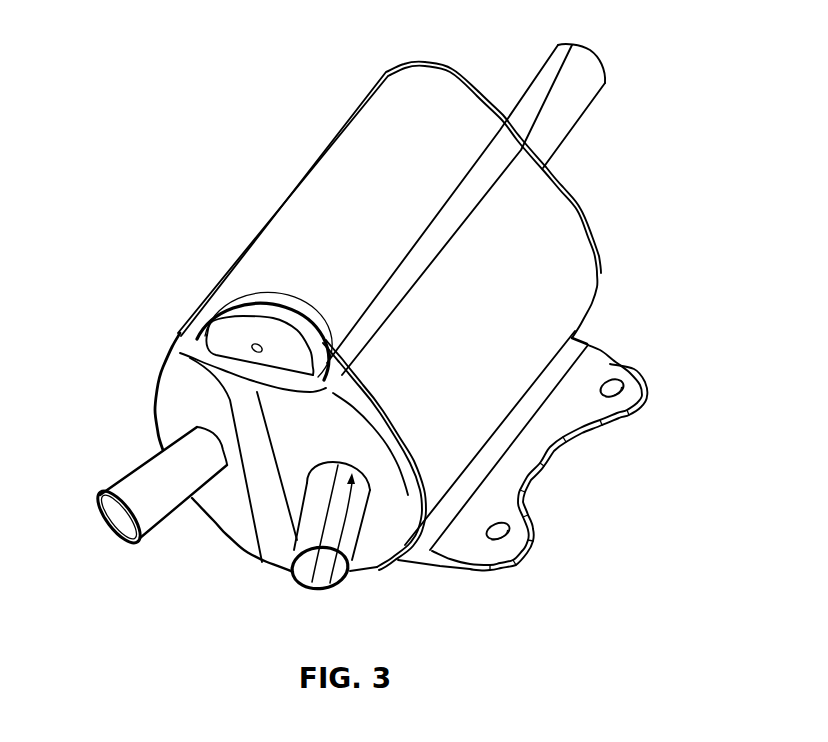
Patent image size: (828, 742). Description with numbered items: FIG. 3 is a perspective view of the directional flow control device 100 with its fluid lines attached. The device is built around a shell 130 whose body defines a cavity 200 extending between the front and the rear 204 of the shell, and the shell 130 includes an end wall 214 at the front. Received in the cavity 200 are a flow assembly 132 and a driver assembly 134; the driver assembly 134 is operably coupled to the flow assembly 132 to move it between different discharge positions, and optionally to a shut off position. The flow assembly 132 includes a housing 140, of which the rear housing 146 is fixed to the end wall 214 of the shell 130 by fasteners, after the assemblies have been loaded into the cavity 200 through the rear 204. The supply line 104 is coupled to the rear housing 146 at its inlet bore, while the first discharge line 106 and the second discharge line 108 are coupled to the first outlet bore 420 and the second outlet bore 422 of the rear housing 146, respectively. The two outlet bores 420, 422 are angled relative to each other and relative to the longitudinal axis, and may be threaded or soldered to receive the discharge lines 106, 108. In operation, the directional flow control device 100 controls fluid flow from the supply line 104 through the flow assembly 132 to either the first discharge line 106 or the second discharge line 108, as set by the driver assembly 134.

The directional flow control device 100 is at (328, 38).
The first supply line 104 is at (570, 108).
The first discharge line 106 is at (137, 470).
The second discharge line 108 is at (350, 537).
The shell 130 is at (543, 300).
The flow assembly 132 is at (245, 518).
The driver assembly 134 is at (219, 328).
The housing 140 is at (225, 497).
The rear housing 146 is at (393, 517).
The cavity 200 is at (320, 395).
The rear 204 is at (212, 323).
The end wall 214 is at (579, 206).
The first outlet bore 420 is at (170, 425).
The second outlet bore 422 is at (310, 587).